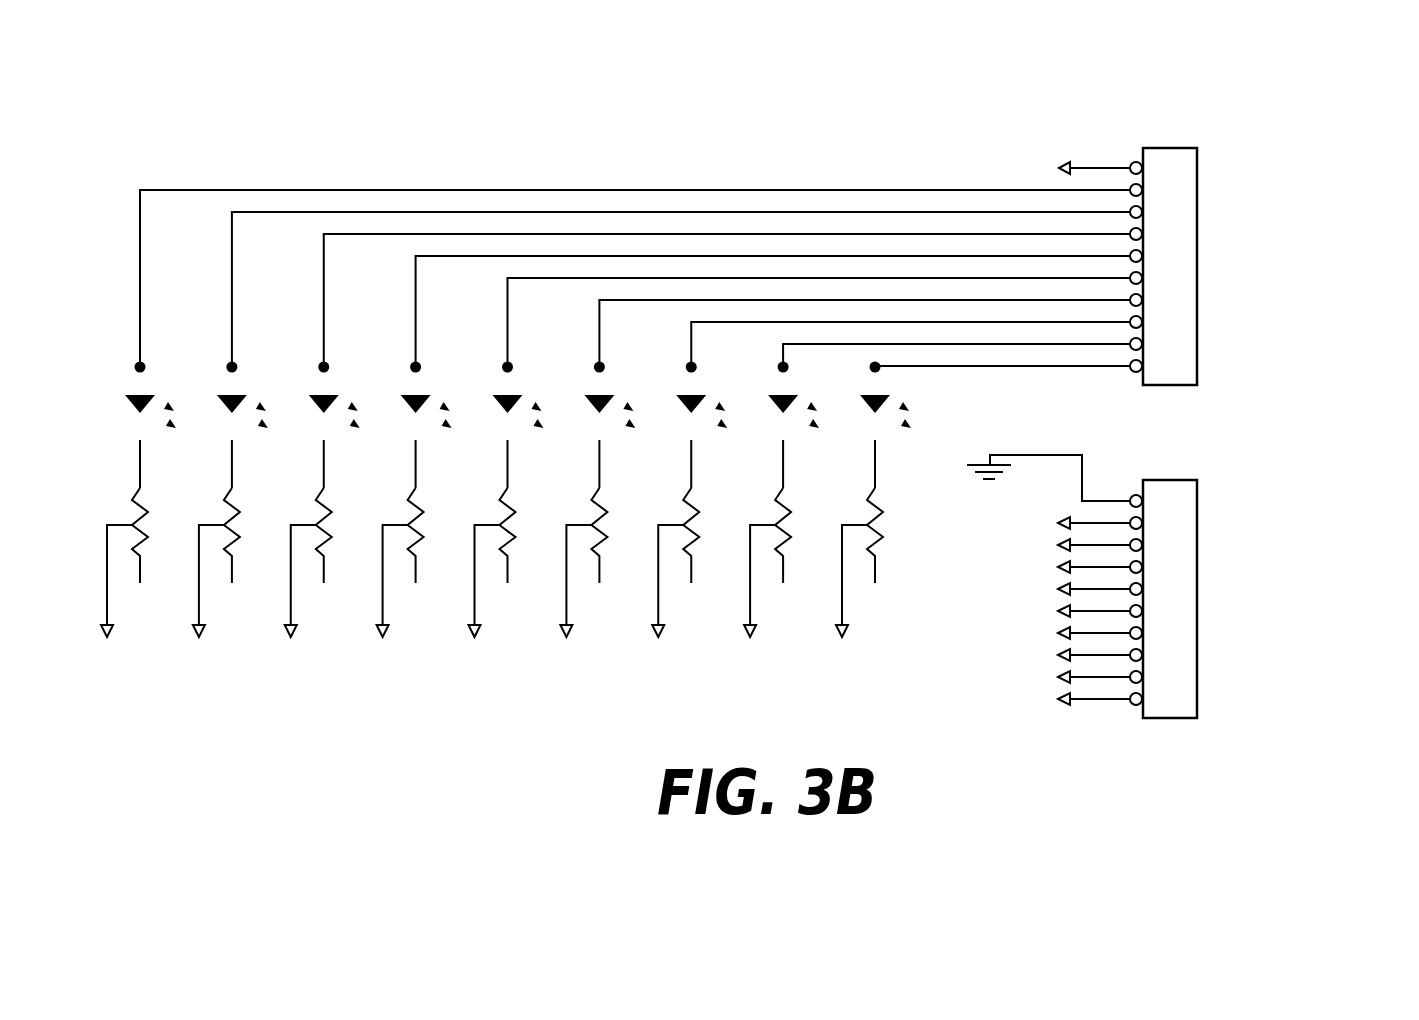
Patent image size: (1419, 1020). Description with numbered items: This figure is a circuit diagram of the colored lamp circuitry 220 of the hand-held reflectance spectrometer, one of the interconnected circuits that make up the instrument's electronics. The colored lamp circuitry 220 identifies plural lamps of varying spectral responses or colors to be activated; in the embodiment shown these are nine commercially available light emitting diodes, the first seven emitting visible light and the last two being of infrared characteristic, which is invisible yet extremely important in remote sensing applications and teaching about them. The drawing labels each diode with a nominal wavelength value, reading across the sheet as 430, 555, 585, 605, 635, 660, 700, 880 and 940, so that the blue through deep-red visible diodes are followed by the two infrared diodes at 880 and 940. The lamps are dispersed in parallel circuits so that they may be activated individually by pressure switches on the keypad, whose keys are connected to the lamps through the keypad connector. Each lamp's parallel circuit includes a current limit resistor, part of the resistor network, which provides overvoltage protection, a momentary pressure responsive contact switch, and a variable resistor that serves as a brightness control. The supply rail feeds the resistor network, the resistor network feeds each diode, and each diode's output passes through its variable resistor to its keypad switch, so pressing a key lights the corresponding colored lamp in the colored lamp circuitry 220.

The colored lamp circuitry 220 is at (752, 425).
The LED D1 (430 nm) 430 is at (166, 401).
The LED D2 (555 nm) 555 is at (258, 401).
The LED D3 (585 nm) 585 is at (350, 401).
The LED D4 (605 nm) 605 is at (442, 401).
The LED D5 (635 nm) 635 is at (535, 401).
The LED D6 (660 nm) 660 is at (626, 401).
The LED D7 (700 nm) 700 is at (717, 401).
The LED D8 (880 nm) 880 is at (809, 401).
The LED D9 (940 nm) 940 is at (901, 401).